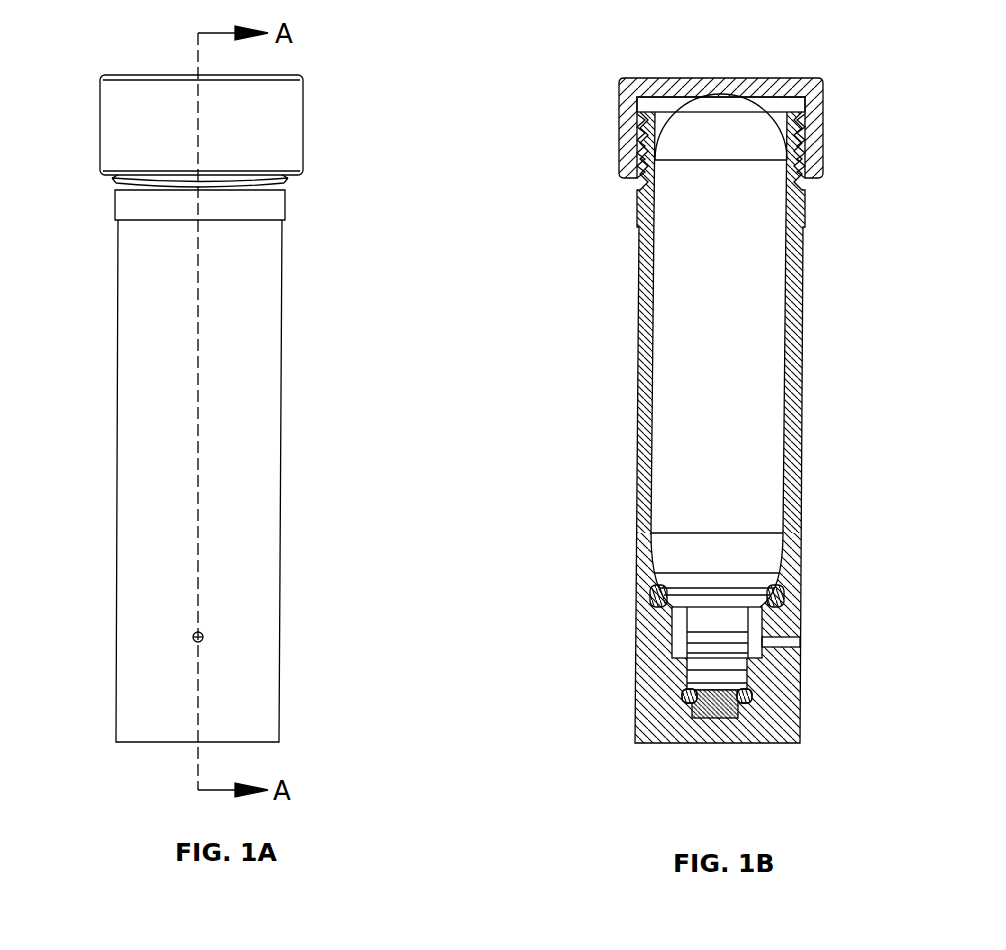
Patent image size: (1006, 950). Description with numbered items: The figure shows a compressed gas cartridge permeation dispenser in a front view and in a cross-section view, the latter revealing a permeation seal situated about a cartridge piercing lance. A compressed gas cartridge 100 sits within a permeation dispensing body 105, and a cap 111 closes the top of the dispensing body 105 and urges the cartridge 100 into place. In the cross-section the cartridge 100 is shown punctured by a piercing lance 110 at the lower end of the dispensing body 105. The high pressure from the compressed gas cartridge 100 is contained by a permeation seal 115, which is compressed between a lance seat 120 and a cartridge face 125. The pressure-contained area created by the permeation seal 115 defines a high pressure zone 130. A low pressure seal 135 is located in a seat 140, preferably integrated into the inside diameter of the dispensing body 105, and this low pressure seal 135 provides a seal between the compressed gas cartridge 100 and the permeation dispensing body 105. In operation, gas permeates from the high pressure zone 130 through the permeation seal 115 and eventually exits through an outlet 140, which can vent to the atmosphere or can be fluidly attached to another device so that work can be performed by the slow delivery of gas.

In FIG. 1B, the compressed gas cartridge 100 is at (748, 320).
In FIG. 1A, the permeation dispensing body 105 is at (233, 343).
In FIG. 1B, the permeation dispensing body 105 is at (793, 420).
In FIG. 1B, the piercing lance 110 is at (730, 717).
In FIG. 1A, the cap 111 is at (275, 130).
In FIG. 1B, the cap 111 is at (817, 103).
In FIG. 1B, the permeation seal 115 is at (747, 694).
In FIG. 1B, the lance seat 120 is at (688, 702).
In FIG. 1B, the cartridge face 125 is at (713, 697).
In FIG. 1B, the high pressure zone 130 is at (713, 697).
In FIG. 1B, the low pressure seal 135 is at (795, 608).
In FIG. 1A, the seat 140 is at (205, 637).
In FIG. 1B, the seat 140 is at (783, 600).